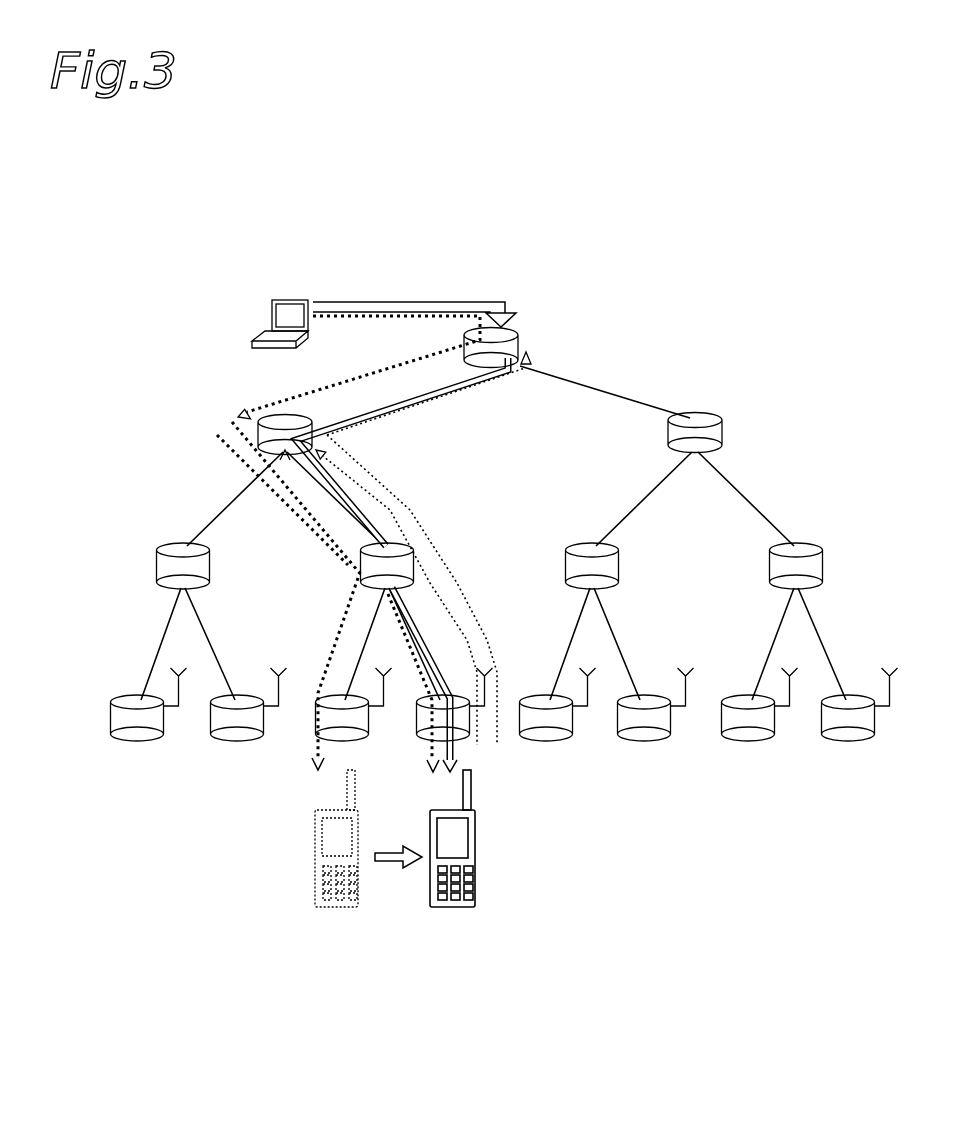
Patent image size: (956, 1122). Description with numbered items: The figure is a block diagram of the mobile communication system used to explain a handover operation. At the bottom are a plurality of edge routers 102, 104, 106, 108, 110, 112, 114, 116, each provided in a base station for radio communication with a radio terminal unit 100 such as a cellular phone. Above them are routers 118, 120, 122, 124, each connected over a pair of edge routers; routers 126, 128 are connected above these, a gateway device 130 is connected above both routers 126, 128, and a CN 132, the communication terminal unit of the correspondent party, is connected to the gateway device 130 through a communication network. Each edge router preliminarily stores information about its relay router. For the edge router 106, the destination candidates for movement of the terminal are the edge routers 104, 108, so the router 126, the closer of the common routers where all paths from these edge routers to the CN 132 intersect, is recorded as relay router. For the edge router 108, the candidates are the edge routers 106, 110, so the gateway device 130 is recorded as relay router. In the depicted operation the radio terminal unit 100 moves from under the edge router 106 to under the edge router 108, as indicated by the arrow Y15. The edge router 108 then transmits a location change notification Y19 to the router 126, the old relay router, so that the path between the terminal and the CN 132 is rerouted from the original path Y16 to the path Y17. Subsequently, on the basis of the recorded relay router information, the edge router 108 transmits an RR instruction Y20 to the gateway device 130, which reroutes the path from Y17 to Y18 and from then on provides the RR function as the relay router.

The radio terminal unit 100 is at (326, 908).
The edge router 102 is at (142, 737).
The edge router 104 is at (240, 737).
The edge router 106 is at (332, 740).
The edge router 108 is at (472, 740).
The edge router 110 is at (550, 737).
The edge router 112 is at (648, 737).
The edge router 114 is at (750, 737).
The edge router 116 is at (850, 737).
The router 118 is at (157, 568).
The router 120 is at (360, 573).
The router 122 is at (567, 566).
The router 124 is at (770, 569).
The router 126 is at (257, 432).
The router 128 is at (722, 431).
The gateway device 130 is at (519, 343).
The CN 132 is at (287, 300).
The arrow indicating movement of the radio terminal unit Y15 is at (392, 862).
The path before rerouting Y16 is at (340, 630).
The rerouted path via old relay router Y17 is at (404, 683).
The rerouted path via gateway device Y18 is at (408, 607).
The location change notification Y19 is at (370, 474).
The RR instruction Y20 is at (400, 505).